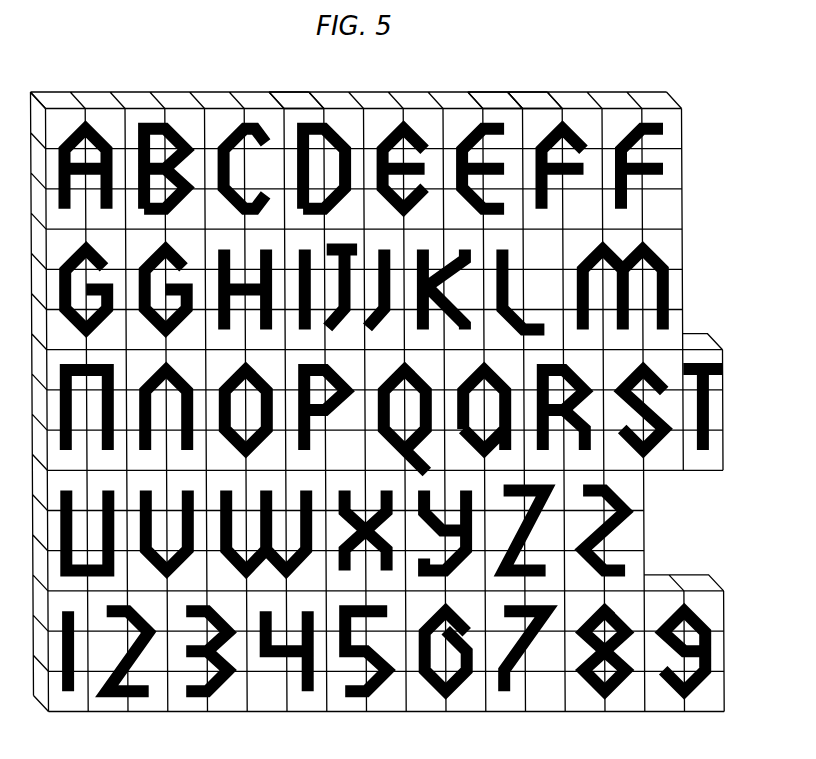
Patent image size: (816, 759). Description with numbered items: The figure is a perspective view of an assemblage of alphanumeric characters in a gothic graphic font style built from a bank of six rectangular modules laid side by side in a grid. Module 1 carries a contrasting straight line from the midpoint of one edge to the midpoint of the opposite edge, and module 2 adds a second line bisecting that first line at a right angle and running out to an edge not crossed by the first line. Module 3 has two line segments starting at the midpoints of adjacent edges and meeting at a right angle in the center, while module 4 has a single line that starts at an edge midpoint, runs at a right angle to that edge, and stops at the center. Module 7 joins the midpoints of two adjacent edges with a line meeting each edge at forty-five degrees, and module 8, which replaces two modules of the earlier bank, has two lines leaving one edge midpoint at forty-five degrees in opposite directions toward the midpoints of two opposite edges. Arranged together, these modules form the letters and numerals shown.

The module 1 is at (676, 283).
The module 2 is at (369, 160).
The module 3 is at (302, 103).
The module 4 is at (496, 100).
The module 7 is at (539, 100).
The module 8 is at (594, 405).